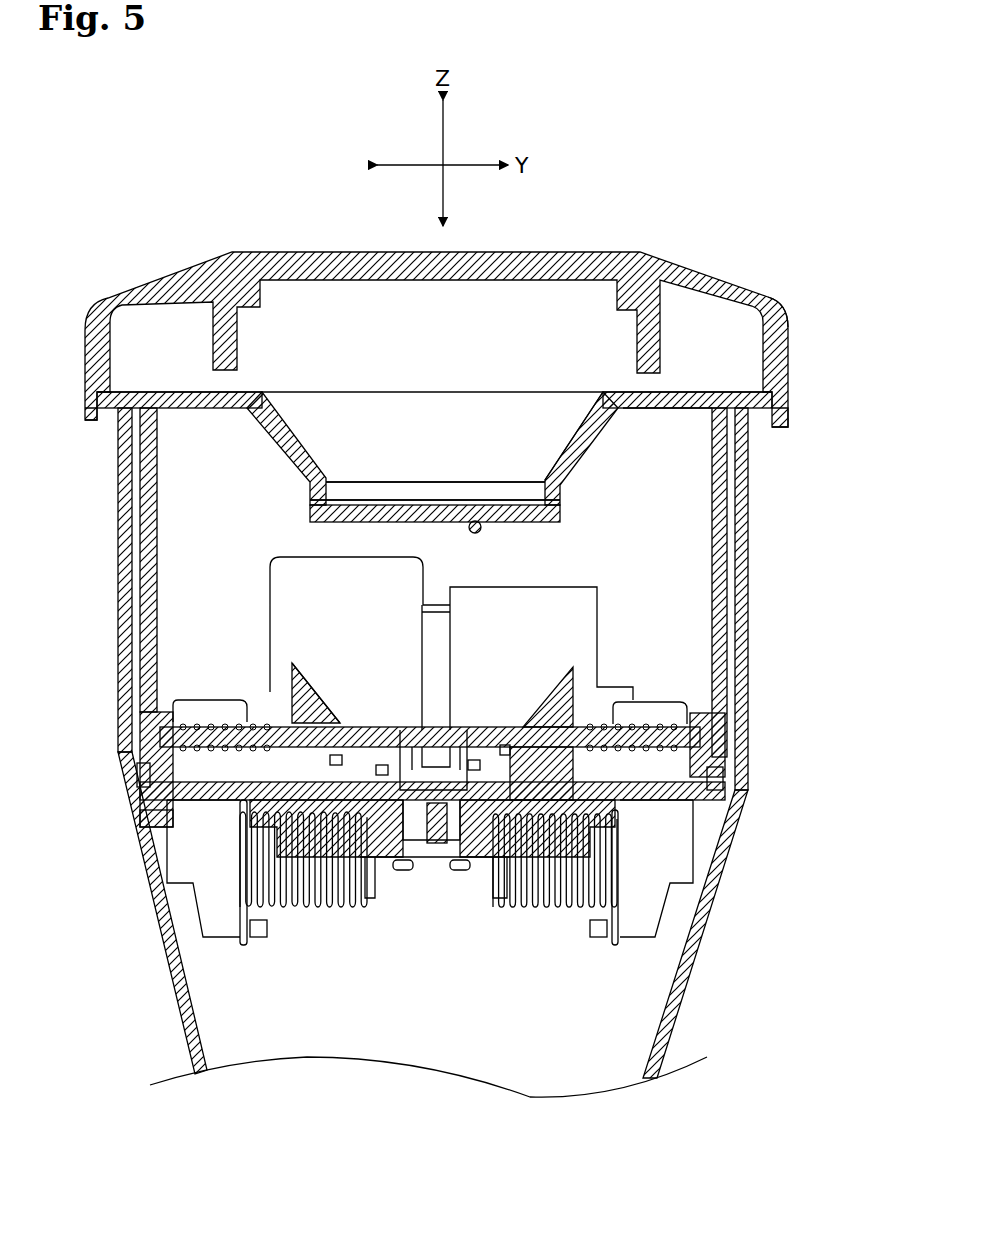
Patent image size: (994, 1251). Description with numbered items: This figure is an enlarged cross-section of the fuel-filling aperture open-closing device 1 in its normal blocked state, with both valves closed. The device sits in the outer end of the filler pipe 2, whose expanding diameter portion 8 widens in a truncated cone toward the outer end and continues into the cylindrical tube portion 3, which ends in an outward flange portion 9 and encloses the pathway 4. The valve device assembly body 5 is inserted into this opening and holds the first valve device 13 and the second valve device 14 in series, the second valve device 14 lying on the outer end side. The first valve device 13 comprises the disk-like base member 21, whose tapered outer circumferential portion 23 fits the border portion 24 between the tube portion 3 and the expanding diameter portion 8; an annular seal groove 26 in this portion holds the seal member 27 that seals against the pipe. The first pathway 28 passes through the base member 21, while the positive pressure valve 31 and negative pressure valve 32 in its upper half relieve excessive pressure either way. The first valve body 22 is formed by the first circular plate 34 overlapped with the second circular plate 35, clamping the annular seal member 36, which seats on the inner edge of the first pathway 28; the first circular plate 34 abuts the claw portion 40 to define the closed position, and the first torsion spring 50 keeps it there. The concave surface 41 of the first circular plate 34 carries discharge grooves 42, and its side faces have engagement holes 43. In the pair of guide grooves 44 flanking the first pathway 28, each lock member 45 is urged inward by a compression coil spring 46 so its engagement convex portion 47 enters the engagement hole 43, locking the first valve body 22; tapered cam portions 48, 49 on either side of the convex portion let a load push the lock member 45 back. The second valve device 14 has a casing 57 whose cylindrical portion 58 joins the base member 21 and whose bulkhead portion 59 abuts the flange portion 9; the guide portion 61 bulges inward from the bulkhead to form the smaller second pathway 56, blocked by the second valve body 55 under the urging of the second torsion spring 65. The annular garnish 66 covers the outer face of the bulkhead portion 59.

The fuel-filling aperture open-closing device 1 is at (681, 222).
The filler pipe 2 is at (751, 560).
The tube portion 3 is at (750, 512).
The pathway 4 is at (655, 1022).
The valve device assembly body 5 is at (221, 243).
The expanding diameter portion 8 is at (693, 932).
The outward flange portion 9 is at (103, 420).
The first valve device 13 is at (150, 652).
The second valve device 14 is at (372, 478).
The base member 21 is at (175, 800).
The first valve body 22 is at (372, 745).
The outer circumferential portion 23 is at (160, 830).
The border portion 24 is at (735, 800).
The seal groove 26 is at (137, 777).
The seal member 27 is at (722, 777).
The first pathway 28 is at (180, 745).
The positive pressure valve 31 is at (565, 590).
The negative pressure valve 32 is at (300, 558).
The first circular plate 34 is at (530, 765).
The second circular plate 35 is at (430, 860).
The seal member 36 is at (250, 807).
The claw portion 40 is at (440, 740).
The surface 41 is at (420, 700).
The discharge grooves 42 is at (505, 745).
The engagement holes 43 is at (630, 708).
The guide grooves 44 is at (190, 695).
The lock member 45 is at (295, 663).
The compression coil spring 46 is at (215, 703).
The engagement convex portion 47 is at (600, 805).
The cam portion 48 is at (327, 700).
The cam portion 49 is at (270, 815).
The first torsion spring 50 is at (333, 906).
The second valve body 55 is at (470, 505).
The second pathway 56 is at (525, 500).
The casing 57 is at (688, 392).
The cylindrical portion 58 is at (722, 672).
The bulkhead portion 59 is at (665, 409).
The guide portion 61 is at (600, 440).
The second torsion spring 65 is at (481, 531).
The garnish 66 is at (775, 292).